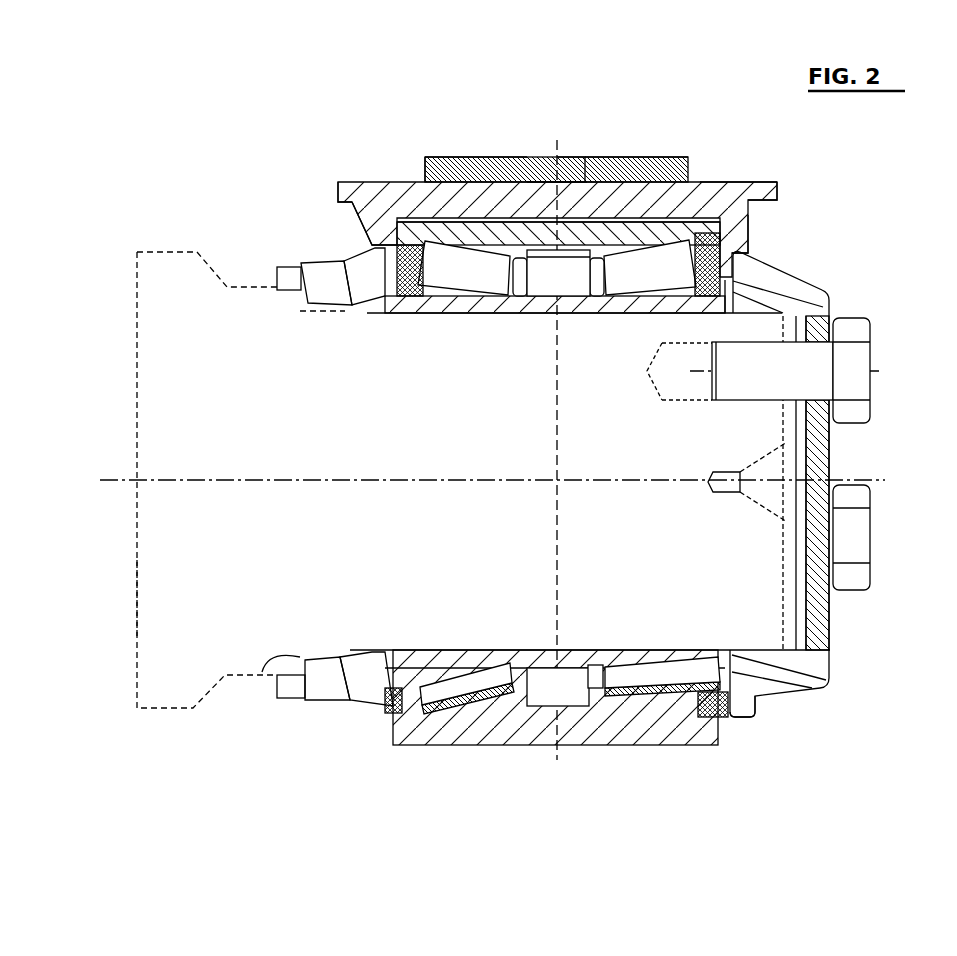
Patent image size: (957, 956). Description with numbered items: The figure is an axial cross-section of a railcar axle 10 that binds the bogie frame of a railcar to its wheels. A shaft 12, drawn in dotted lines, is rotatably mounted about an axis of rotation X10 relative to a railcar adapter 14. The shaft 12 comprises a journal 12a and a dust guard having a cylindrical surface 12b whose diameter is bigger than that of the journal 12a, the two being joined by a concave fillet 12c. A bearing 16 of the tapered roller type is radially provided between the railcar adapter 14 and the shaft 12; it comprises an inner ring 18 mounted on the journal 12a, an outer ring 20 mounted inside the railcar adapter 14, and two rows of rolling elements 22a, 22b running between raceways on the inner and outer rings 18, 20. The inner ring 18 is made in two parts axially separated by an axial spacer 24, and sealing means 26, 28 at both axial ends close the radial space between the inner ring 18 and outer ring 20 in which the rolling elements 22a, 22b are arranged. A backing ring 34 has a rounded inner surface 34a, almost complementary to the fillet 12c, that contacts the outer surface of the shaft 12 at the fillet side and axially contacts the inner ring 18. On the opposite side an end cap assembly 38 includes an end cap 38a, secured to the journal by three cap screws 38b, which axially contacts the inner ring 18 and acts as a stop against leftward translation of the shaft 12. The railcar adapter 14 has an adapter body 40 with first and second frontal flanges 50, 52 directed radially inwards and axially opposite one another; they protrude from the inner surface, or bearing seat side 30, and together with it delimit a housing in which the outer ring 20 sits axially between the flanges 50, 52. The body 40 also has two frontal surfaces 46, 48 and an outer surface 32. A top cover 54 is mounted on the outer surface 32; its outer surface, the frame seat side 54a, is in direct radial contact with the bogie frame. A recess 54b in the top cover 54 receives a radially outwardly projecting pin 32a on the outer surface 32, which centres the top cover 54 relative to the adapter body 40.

The railcar axle 10 is at (288, 139).
The shaft 12 is at (133, 282).
The journal 12a is at (775, 620).
The cylindrical surface 12b is at (157, 597).
The concave fillet 12c is at (300, 268).
The railcar adapter 14 is at (398, 180).
The bearing 16 is at (577, 690).
The inner ring 18 is at (665, 705).
The outer ring 20 is at (620, 708).
The first row of rolling elements 22a is at (464, 268).
The second row of rolling elements 22b is at (650, 267).
The axial spacer 24 is at (528, 704).
The sealing means 26 is at (393, 718).
The sealing means 28 is at (727, 715).
The bearing seat side 30 is at (443, 157).
The outer surface 32 is at (723, 182).
The pin 32a is at (553, 157).
The backing ring 34 is at (321, 703).
The inner surface 34a is at (270, 658).
The end cap assembly 38 is at (840, 441).
The end cap 38a is at (822, 684).
The cap screws 38b is at (850, 347).
The adapter body 40 is at (493, 157).
The frontal surface 46 is at (773, 182).
The frontal surface 48 is at (339, 182).
The first frontal flange 50 is at (750, 220).
The second frontal flange 52 is at (362, 222).
The top cover 54 is at (678, 157).
The frame seat side 54a is at (625, 157).
The recess 54b is at (573, 157).
The axis of rotation X10 is at (117, 470).